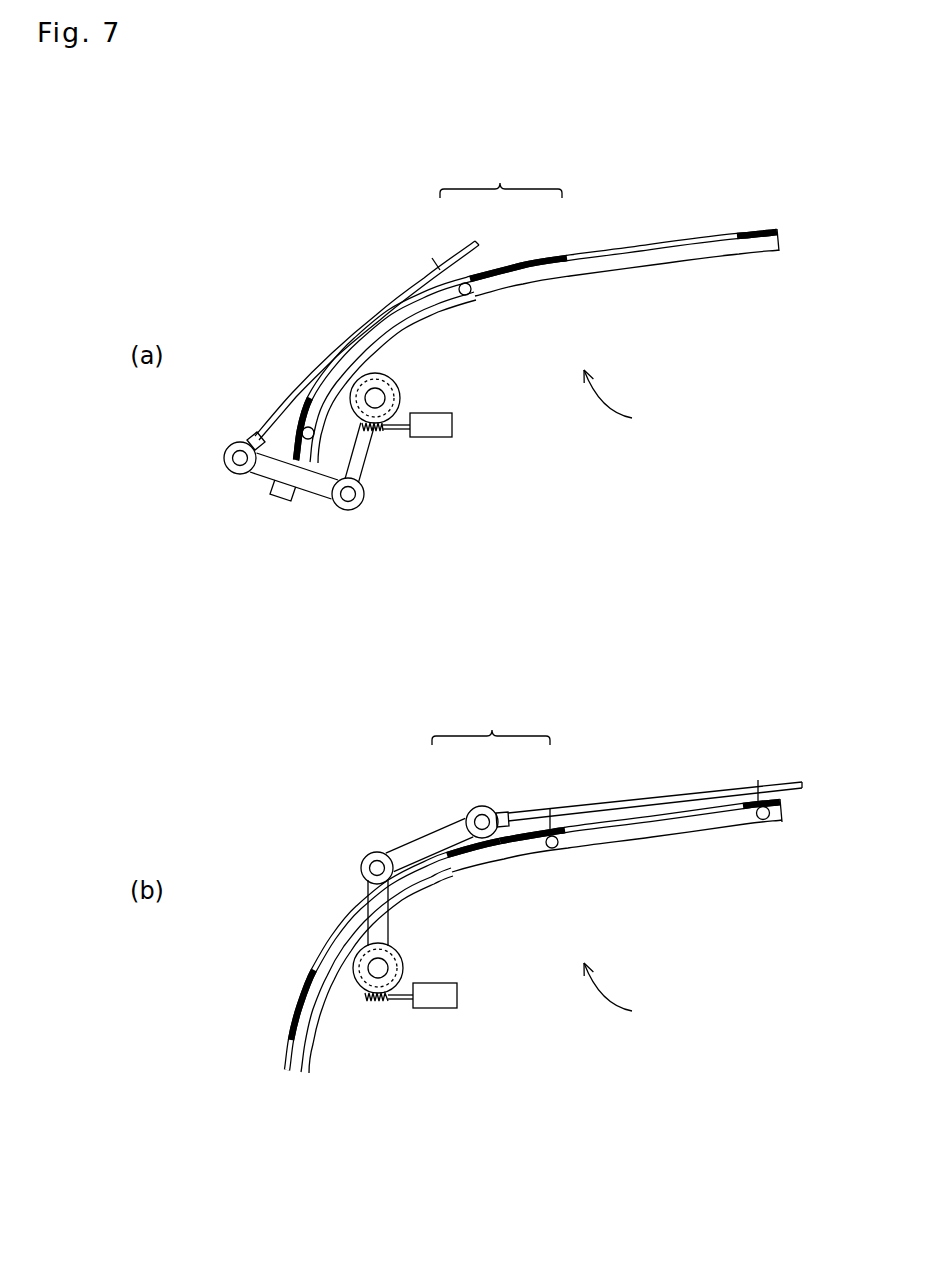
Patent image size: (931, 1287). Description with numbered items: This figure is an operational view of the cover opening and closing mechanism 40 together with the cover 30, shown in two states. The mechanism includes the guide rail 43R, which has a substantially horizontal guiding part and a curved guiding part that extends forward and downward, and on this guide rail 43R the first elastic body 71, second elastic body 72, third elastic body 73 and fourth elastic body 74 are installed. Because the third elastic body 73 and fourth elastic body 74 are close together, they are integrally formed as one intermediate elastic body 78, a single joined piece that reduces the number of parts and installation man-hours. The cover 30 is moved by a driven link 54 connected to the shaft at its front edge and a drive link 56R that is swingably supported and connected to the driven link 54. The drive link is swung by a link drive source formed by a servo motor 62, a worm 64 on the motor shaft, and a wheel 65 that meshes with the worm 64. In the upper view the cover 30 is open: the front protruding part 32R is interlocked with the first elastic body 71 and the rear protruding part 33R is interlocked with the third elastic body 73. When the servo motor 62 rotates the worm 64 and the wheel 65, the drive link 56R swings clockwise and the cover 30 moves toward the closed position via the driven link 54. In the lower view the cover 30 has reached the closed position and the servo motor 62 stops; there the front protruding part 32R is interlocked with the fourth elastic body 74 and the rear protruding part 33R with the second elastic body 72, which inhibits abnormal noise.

The cover 30 is at (372, 325).
The front protruding part 32R is at (318, 423).
The rear protruding part 33R is at (475, 296).
The cover opening and closing mechanism 40 is at (620, 698).
The guide rail 43R is at (724, 263).
The driven link 54 is at (317, 494).
The drive link 56R is at (360, 474).
The servo motor 62 is at (452, 424).
The worm 64 is at (383, 431).
The wheel 65 is at (402, 392).
The first elastic body 71 is at (300, 410).
The second elastic body 72 is at (757, 231).
The third elastic body 73 is at (477, 266).
The fourth elastic body 74 is at (553, 255).
The intermediate elastic body 78 is at (500, 181).